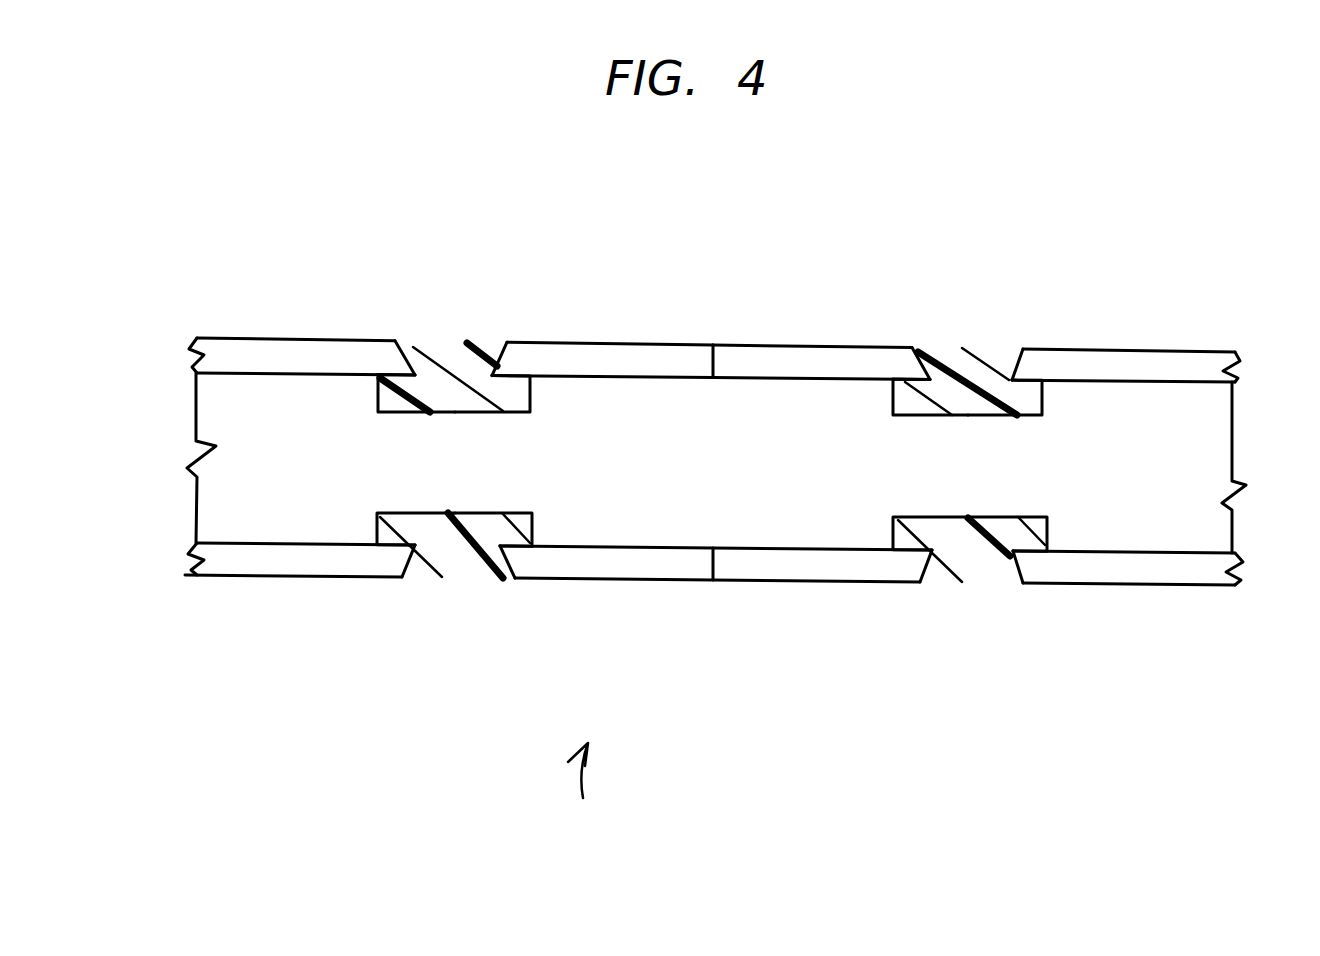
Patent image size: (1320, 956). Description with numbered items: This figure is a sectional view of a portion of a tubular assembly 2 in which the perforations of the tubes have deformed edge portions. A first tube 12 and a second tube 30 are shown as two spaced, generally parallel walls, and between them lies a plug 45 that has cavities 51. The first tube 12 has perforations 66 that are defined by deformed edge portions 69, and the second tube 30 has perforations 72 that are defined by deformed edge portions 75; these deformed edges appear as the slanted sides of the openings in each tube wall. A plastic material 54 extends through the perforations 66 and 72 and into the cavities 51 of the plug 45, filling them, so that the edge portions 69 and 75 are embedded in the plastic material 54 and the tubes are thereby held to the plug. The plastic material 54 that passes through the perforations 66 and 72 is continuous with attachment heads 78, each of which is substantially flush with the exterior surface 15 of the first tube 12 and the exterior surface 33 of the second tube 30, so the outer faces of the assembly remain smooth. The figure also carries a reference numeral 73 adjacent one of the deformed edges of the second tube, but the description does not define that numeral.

The tubular assembly 2 is at (587, 780).
The first tube 12 is at (296, 346).
The exterior surface 15 is at (333, 343).
The second tube 30 is at (787, 350).
The exterior surface 33 is at (836, 347).
The plug 45 is at (196, 447).
The cavities 51 is at (515, 513).
The plastic material 54 is at (405, 513).
The perforations 66 is at (465, 344).
The deformed edge portions 69 is at (415, 343).
The perforations 72 is at (977, 349).
The slanted edge 73 is at (932, 584).
The deformed edge portions 75 is at (935, 348).
The attachment heads 78 is at (431, 343).